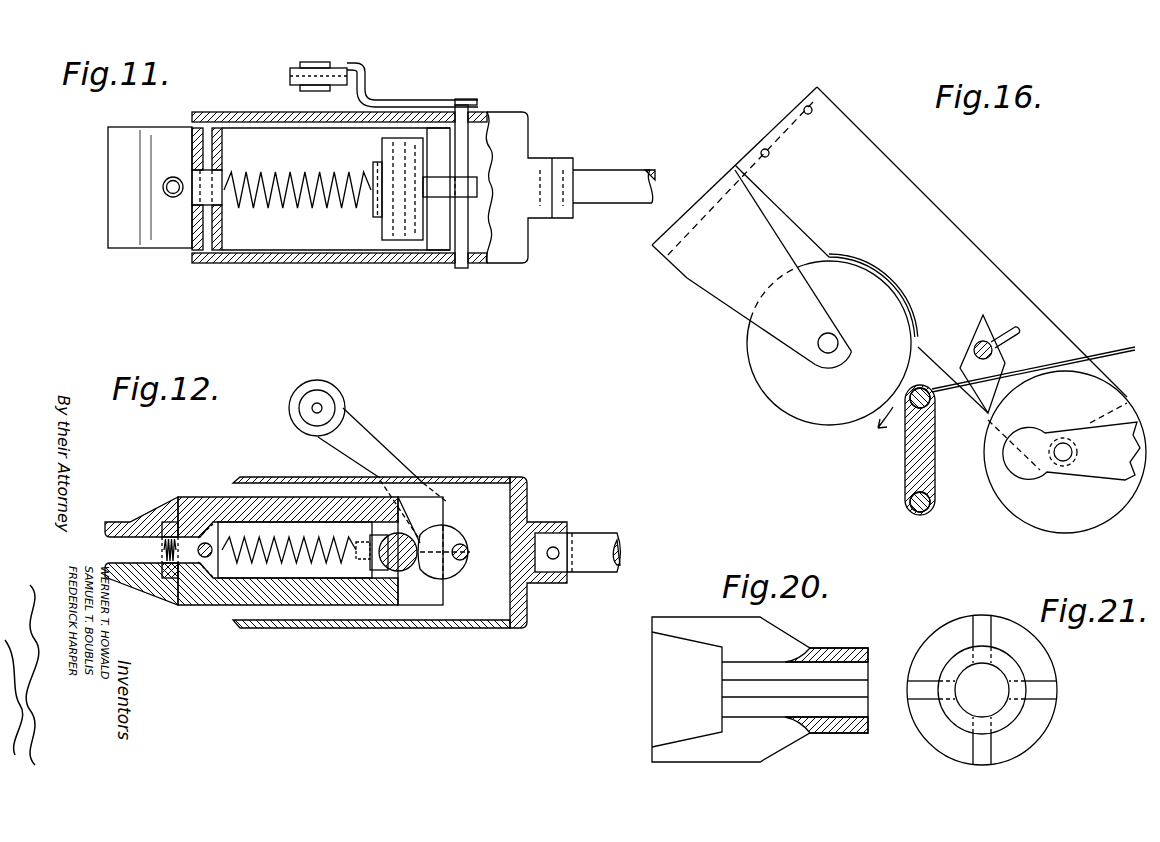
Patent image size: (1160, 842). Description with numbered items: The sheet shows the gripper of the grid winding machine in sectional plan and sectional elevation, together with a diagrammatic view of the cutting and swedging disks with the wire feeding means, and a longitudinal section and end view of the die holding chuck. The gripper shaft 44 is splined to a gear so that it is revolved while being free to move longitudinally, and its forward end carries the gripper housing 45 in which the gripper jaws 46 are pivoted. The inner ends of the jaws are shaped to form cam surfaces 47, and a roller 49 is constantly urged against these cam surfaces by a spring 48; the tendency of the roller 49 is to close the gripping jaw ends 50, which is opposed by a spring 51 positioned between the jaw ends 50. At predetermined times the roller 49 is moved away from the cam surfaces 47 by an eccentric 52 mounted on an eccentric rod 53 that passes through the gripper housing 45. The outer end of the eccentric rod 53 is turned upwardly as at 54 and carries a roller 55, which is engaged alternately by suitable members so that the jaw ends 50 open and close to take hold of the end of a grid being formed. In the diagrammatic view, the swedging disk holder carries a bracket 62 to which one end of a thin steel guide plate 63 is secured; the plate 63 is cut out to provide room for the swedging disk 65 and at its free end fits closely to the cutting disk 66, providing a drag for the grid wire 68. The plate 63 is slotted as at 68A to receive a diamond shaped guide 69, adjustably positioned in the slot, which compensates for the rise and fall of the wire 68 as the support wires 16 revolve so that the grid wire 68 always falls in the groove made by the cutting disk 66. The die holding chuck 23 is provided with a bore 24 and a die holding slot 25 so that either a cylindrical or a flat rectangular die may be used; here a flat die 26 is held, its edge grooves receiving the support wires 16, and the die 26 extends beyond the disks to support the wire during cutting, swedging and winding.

In FIG. 16, the support wire 16 is at (928, 405).
In FIG. 20, the die holding chuck 23 is at (785, 738).
In FIG. 21, the die holding chuck 23 is at (1040, 728).
In FIG. 21, the bore 24 is at (972, 685).
In FIG. 20, the die holding slot 25 is at (797, 688).
In FIG. 16, the die 26 is at (908, 458).
In FIG. 11, the gripper shaft 44 is at (603, 190).
In FIG. 12, the gripper shaft 44 is at (592, 550).
In FIG. 11, the gripper housing 45 is at (503, 125).
In FIG. 12, the gripper housing 45 is at (517, 515).
In FIG. 12, the gripper jaws 46 is at (250, 497).
In FIG. 12, the cam surfaces 47 is at (382, 568).
In FIG. 11, the spring 48 is at (278, 172).
In FIG. 12, the spring 48 is at (262, 565).
In FIG. 11, the roller 49 is at (385, 152).
In FIG. 12, the roller 49 is at (390, 562).
In FIG. 11, the gripping jaw ends 50 is at (108, 173).
In FIG. 12, the gripping jaw ends 50 is at (116, 522).
In FIG. 11, the spring 51 is at (170, 192).
In FIG. 12, the spring 51 is at (170, 522).
In FIG. 11, the eccentric 52 is at (460, 187).
In FIG. 12, the eccentric 52 is at (444, 540).
In FIG. 11, the eccentric rod 53 is at (462, 250).
In FIG. 12, the eccentric rod 53 is at (461, 562).
In FIG. 11, the upturned end 54 is at (386, 102).
In FIG. 12, the upturned end 54 is at (368, 458).
In FIG. 11, the roller 55 is at (335, 74).
In FIG. 12, the roller 55 is at (343, 392).
In FIG. 16, the bracket 62 is at (738, 172).
In FIG. 16, the guide plate 63 is at (922, 208).
In FIG. 16, the swedging disk 65 is at (818, 408).
In FIG. 16, the cutting disk 66 is at (1100, 510).
In FIG. 16, the grid wire 68 is at (1112, 325).
In FIG. 16, the slot 68A is at (1008, 332).
In FIG. 16, the diamond shaped guide 69 is at (975, 330).